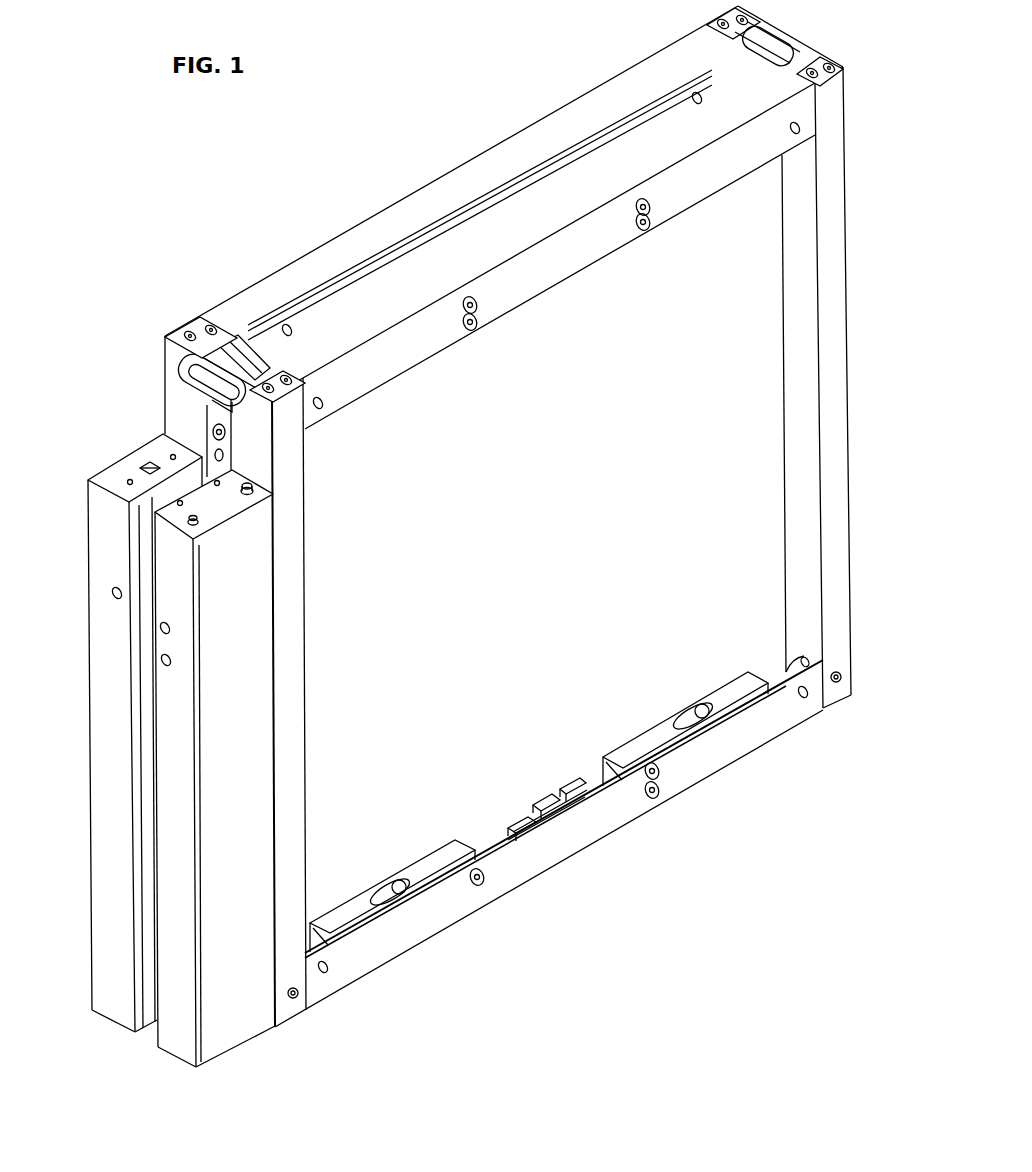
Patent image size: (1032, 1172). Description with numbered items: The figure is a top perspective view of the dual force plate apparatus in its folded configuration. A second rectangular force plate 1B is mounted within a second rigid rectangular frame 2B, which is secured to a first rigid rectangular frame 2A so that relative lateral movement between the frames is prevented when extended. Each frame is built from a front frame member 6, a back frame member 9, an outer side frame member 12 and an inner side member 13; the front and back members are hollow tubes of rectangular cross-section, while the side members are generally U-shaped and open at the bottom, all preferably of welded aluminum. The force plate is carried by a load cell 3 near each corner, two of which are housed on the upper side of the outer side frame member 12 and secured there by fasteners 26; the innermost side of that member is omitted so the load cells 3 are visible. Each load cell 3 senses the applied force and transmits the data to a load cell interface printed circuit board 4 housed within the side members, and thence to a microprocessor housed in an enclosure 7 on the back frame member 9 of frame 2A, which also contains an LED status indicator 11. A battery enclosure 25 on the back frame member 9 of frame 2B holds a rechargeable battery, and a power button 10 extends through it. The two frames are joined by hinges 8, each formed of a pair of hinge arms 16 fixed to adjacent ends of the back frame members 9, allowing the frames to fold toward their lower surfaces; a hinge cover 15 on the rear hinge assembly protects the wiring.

The second rectangular force plate 1B is at (452, 760).
The first rigid rectangular frame 2A is at (598, 105).
The second rigid rectangular frame 2B is at (832, 480).
The load cell 3 is at (735, 692).
The load cell interface printed circuit board 4 is at (548, 812).
The front frame member 6 is at (832, 340).
The enclosure 7 is at (110, 1003).
The hinge 8 is at (228, 348).
The back frame member 9 is at (185, 415).
The power button 10 is at (240, 486).
The LED status indicator 11 is at (117, 596).
The outer side frame member 12 is at (688, 770).
The inner side member 13 is at (463, 187).
The hinge cover 15 is at (205, 383).
The hinge arm 16 is at (185, 352).
The enclosure 25 is at (235, 1017).
The fastener 26 is at (654, 797).